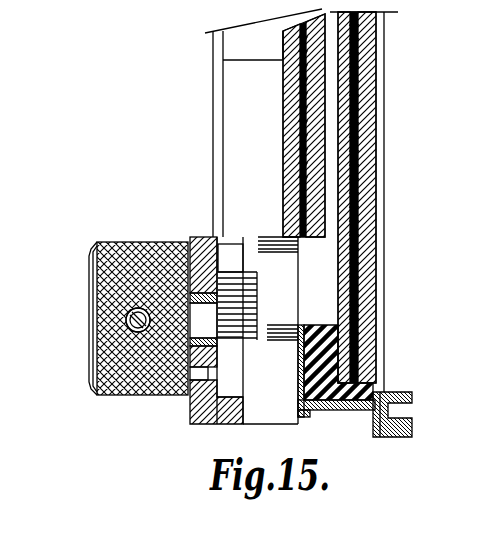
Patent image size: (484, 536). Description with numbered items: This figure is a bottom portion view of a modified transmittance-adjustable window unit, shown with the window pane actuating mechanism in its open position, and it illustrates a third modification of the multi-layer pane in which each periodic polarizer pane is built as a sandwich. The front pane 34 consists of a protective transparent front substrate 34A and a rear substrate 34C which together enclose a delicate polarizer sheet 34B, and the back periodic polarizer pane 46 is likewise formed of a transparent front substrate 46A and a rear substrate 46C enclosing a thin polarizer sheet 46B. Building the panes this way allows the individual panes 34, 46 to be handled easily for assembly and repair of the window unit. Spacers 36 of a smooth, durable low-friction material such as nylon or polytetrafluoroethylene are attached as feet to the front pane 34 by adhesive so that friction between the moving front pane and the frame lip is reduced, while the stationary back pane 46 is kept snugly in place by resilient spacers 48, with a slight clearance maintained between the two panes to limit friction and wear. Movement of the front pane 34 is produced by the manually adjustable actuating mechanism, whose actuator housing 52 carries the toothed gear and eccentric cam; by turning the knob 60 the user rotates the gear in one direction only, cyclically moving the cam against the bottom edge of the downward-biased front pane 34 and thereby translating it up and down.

The front pane 34 is at (237, 127).
The front substrate of pane 34 34A is at (283, 132).
The polarizer sheet of pane 34 34B is at (283, 180).
The rear substrate of pane 34 34C is at (283, 212).
The spacers 36 is at (238, 42).
The back periodic polarizer pane 46 is at (386, 202).
The transparent substrate of pane 46 46A is at (356, 150).
The polarizer sheet of pane 46 46B is at (356, 198).
The rear substrate of pane 46 46C is at (376, 245).
The resilient spacers 48 is at (374, 390).
The actuator housing 52 is at (114, 242).
The knob 60 is at (86, 262).